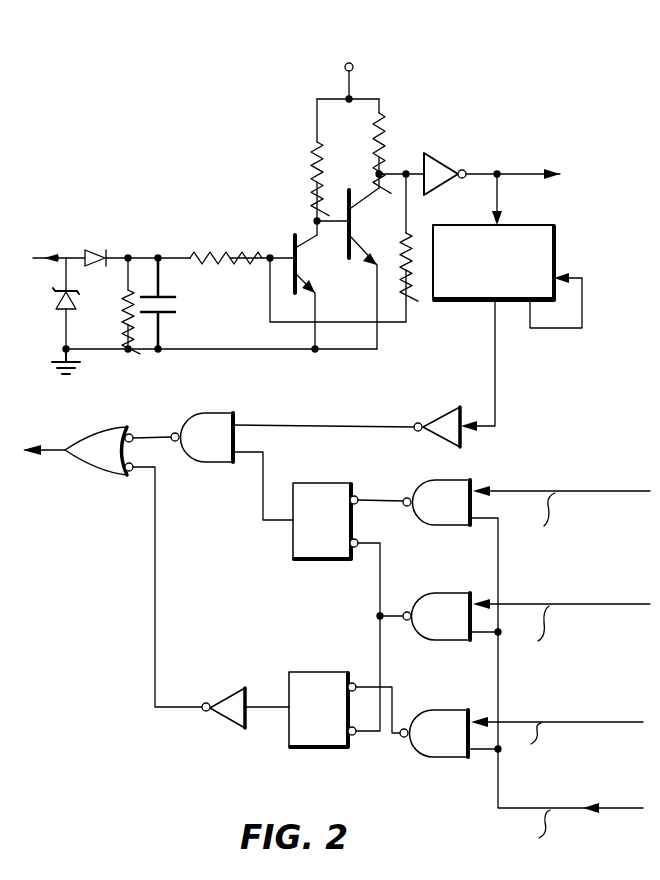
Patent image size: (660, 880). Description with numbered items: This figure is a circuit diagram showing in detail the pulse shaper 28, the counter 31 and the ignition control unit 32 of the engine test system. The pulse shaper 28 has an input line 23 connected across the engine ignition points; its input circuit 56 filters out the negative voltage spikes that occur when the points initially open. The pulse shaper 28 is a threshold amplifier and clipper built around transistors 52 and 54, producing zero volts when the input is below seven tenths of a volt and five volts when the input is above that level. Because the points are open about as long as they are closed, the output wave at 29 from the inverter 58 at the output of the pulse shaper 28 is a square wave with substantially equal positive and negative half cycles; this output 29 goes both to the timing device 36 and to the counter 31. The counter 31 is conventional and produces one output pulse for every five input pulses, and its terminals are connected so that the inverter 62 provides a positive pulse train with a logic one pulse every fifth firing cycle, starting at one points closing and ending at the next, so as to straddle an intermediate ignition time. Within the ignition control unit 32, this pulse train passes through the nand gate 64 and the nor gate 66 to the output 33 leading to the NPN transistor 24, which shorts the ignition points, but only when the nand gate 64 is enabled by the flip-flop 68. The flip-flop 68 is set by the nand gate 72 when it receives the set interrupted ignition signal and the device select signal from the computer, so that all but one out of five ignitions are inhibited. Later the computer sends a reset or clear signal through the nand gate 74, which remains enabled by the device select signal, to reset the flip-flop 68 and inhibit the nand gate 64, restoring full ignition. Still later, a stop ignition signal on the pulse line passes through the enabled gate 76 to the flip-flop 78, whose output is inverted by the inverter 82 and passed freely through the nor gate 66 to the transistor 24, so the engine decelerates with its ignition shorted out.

The input line 23 is at (33, 257).
The NPN transistor 24 is at (56, 532).
The pulse shaper 28 is at (279, 385).
The output 29 is at (497, 180).
The counter 31 is at (459, 300).
The ignition control unit 32 is at (82, 688).
The output line to transistor 33 is at (64, 447).
The timing device 36 is at (609, 256).
The transistor 52 is at (307, 262).
The transistor 54 is at (354, 223).
The input circuit 56 is at (109, 324).
The inverter 58 is at (431, 156).
The inverter 62 is at (441, 412).
The nand gate 64 is at (194, 414).
The nor gate 66 is at (86, 427).
The flip-flop 68 is at (293, 553).
The nand gate 72 is at (431, 481).
The nand gate 74 is at (431, 593).
The gate 76 is at (439, 709).
The flip-flop 78 is at (346, 672).
The inverter 82 is at (241, 690).